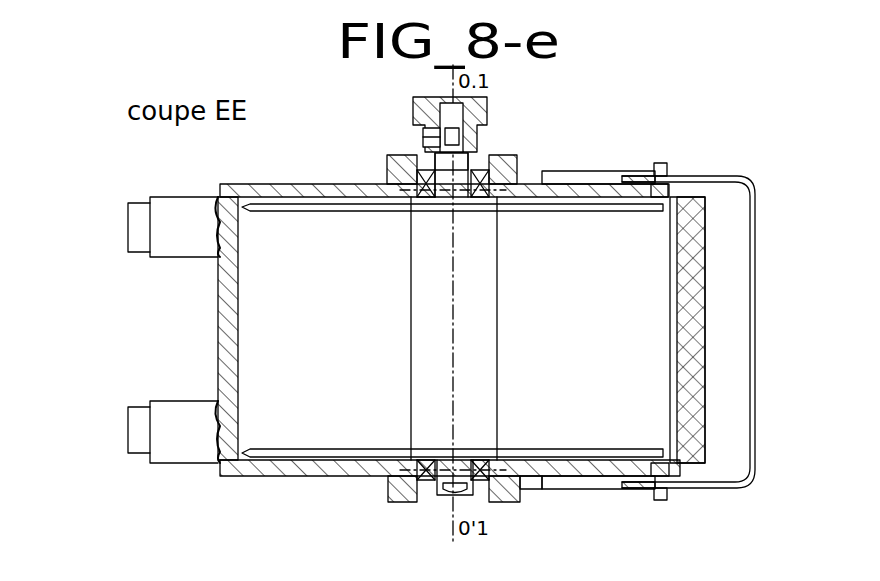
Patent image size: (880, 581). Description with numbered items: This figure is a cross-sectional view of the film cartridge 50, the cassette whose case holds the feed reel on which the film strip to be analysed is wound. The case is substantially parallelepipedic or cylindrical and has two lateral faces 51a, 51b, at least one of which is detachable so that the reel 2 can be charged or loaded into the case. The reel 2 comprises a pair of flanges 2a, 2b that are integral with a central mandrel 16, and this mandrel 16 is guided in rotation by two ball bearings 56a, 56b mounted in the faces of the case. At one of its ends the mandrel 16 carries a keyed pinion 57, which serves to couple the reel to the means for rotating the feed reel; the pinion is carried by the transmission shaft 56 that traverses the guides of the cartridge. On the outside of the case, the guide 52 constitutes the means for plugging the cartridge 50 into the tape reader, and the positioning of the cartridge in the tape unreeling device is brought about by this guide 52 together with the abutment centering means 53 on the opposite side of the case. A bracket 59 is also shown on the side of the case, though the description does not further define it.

The reel 2 is at (452, 330).
The flange 2a is at (598, 206).
The flange 2b is at (628, 448).
The mandrel 16 is at (480, 373).
The film cartridge 50 is at (638, 132).
The lateral face 51a is at (330, 184).
The lateral face 51b is at (340, 476).
The guide 52 is at (518, 168).
The abutment centering means 53 is at (138, 226).
The transmission shaft 56 is at (441, 198).
The ball bearing 56a is at (478, 172).
The ball bearing 56b is at (432, 494).
The pinion 57 is at (413, 106).
The bracket 59 is at (697, 176).